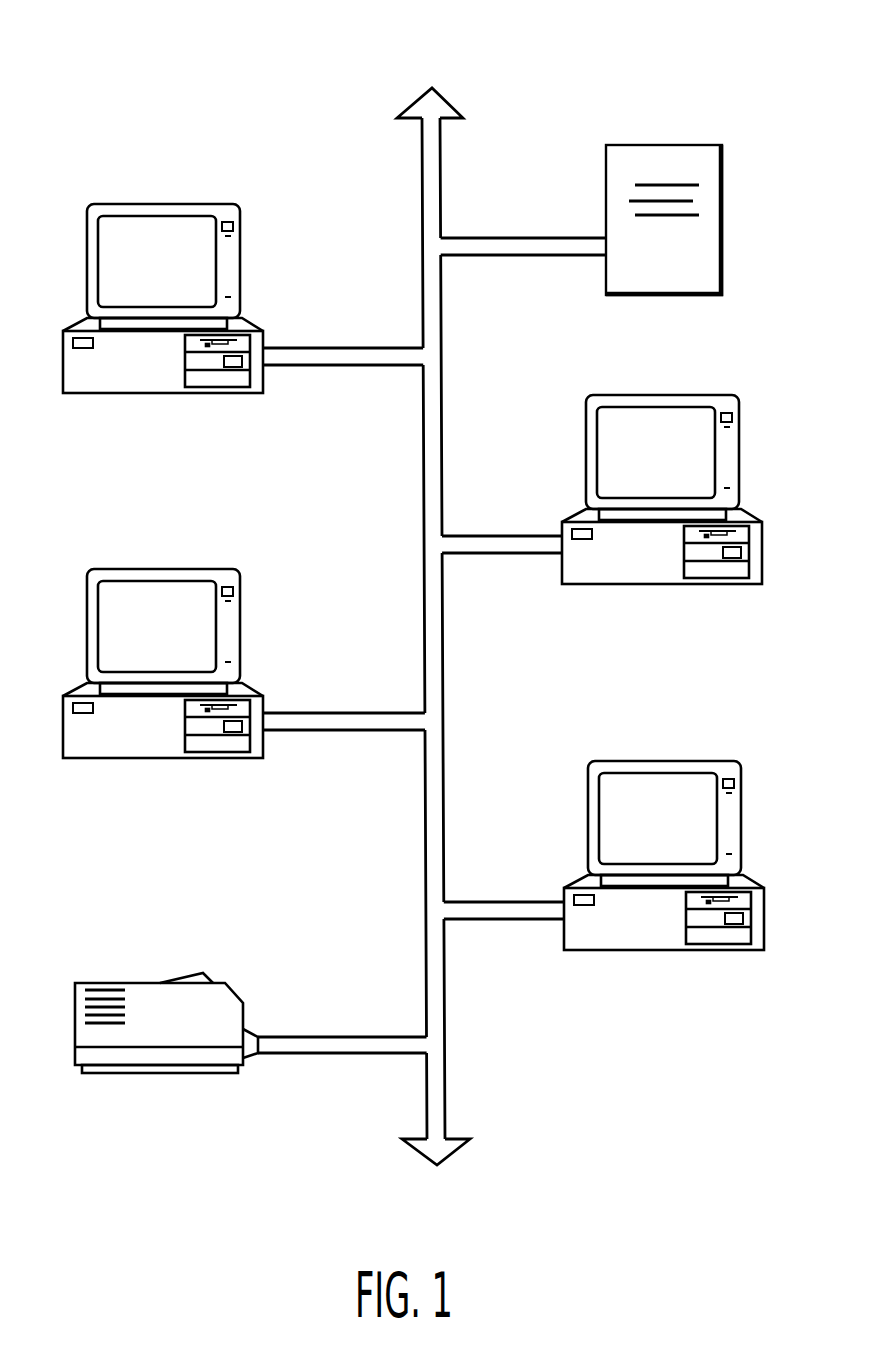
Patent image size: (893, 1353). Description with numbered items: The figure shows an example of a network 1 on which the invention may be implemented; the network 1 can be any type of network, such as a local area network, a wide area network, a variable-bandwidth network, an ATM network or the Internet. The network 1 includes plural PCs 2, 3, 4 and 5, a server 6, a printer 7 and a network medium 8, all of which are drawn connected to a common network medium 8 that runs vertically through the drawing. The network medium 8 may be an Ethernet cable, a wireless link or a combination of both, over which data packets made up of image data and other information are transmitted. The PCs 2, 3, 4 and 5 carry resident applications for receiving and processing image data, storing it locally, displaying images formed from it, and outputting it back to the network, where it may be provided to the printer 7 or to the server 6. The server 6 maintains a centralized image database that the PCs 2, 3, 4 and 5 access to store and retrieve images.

The network 1 is at (683, 49).
The PC 2 is at (240, 250).
The PC 3 is at (740, 467).
The PC 4 is at (743, 850).
The PC 5 is at (243, 635).
The server 6 is at (723, 213).
The printer 7 is at (137, 983).
The network medium 8 is at (443, 685).